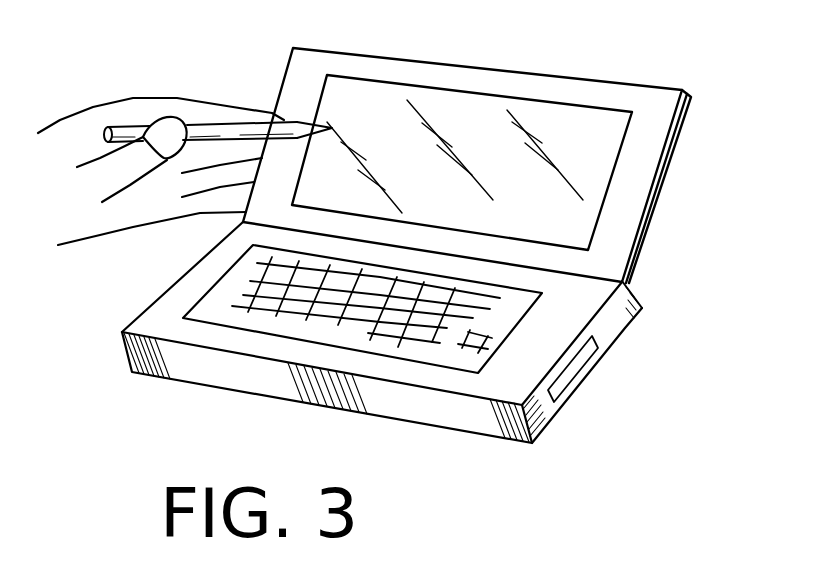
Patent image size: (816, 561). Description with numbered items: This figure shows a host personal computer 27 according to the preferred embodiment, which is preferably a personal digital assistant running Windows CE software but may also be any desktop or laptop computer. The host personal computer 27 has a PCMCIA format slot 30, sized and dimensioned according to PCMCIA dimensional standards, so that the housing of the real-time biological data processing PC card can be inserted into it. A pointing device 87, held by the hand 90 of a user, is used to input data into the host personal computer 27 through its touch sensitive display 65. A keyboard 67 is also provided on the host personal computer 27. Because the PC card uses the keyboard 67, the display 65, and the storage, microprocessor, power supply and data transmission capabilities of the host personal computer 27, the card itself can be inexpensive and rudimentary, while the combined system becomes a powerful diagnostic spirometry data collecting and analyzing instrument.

The host personal computer 27 is at (638, 336).
The PCMCIA format slot 30 is at (592, 362).
The touch sensitive display 65 is at (563, 100).
The keyboard 67 is at (448, 370).
The pointing device 87 is at (295, 118).
The hand 90 is at (100, 104).